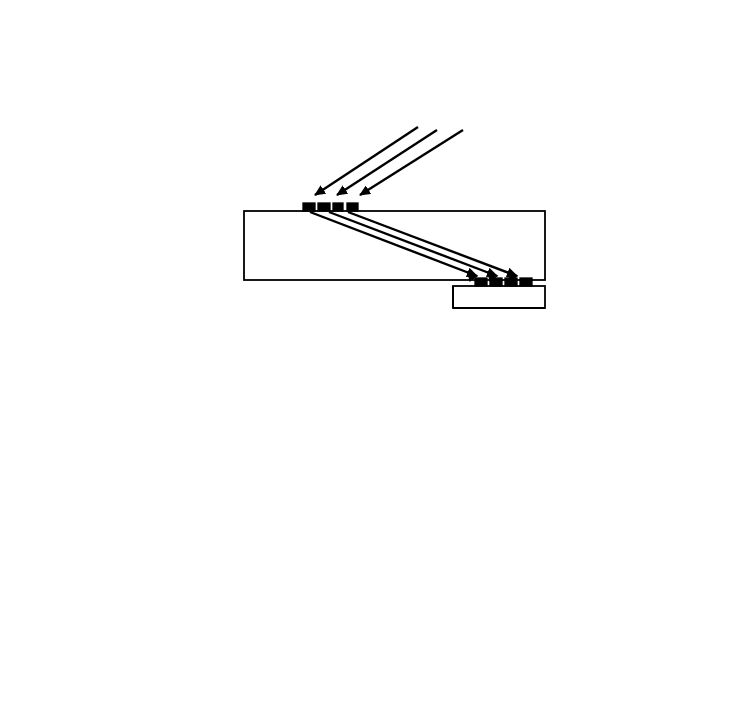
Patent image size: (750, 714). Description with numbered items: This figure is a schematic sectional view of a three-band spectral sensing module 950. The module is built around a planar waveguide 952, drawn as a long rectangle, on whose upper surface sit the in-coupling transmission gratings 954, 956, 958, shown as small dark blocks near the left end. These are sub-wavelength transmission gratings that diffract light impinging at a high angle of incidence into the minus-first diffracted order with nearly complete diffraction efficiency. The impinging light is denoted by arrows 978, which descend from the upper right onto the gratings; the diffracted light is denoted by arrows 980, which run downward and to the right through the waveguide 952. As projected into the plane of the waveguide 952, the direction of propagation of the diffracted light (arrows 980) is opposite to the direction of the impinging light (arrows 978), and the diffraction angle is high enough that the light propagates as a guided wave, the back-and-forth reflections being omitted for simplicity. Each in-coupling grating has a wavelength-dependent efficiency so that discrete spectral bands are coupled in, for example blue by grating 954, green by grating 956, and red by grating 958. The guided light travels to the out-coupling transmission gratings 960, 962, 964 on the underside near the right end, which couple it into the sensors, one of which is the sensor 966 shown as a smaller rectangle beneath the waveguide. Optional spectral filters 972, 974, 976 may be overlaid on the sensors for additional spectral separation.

The three-band spectral sensing module 950 is at (646, 177).
The waveguide 952 is at (545, 252).
The in-coupling transmission grating 954 is at (333, 196).
The in-coupling transmission grating 956 is at (324, 207).
The in-coupling transmission grating 958 is at (338, 207).
The out-coupling transmission grating 960 is at (513, 273).
The out-coupling transmission grating 962 is at (496, 282).
The out-coupling transmission grating 964 is at (511, 282).
The sensor 966 is at (500, 310).
The spectral filter 972 is at (525, 286).
The spectral filter 974 is at (492, 276).
The spectral filter 976 is at (512, 276).
The arrows denoting impinging light 978 is at (463, 128).
The arrows denoting minus-first order diffraction 980 is at (452, 252).